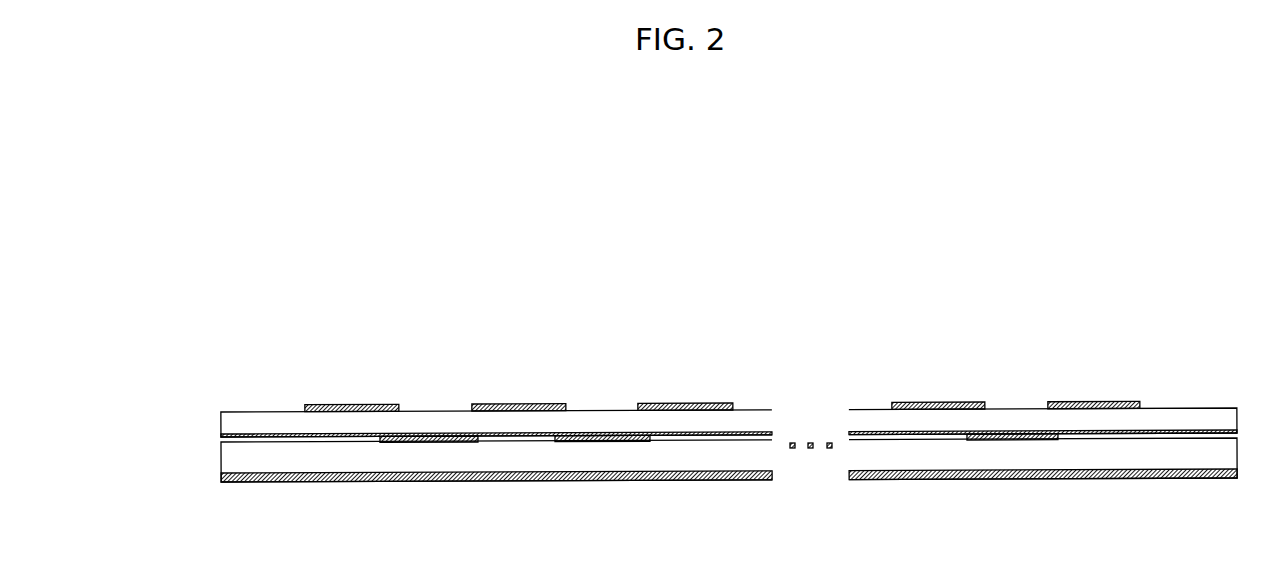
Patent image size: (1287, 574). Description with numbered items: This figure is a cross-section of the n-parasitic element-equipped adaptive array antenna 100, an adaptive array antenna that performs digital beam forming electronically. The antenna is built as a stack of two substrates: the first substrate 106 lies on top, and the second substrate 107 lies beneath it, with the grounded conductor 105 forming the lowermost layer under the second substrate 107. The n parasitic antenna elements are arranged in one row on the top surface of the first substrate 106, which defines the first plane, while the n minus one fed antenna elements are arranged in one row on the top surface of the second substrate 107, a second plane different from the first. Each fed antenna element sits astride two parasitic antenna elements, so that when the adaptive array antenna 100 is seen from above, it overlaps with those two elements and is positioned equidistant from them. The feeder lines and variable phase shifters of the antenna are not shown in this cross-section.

The n-parasitic element-equipped adaptive array antenna 100 is at (1016, 299).
The grounded conductor 105 is at (527, 480).
The first substrate 106 is at (236, 423).
The second substrate 107 is at (679, 485).